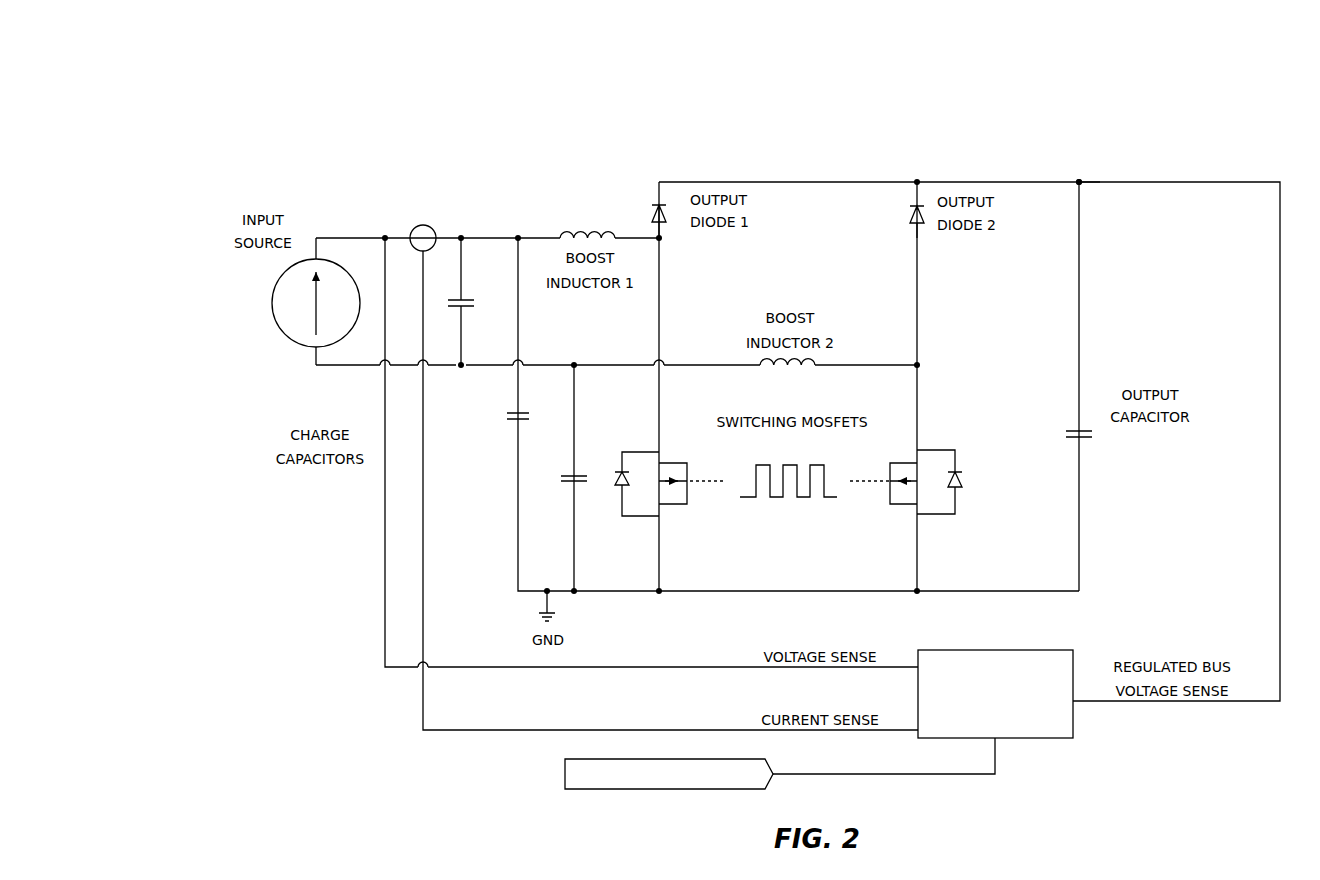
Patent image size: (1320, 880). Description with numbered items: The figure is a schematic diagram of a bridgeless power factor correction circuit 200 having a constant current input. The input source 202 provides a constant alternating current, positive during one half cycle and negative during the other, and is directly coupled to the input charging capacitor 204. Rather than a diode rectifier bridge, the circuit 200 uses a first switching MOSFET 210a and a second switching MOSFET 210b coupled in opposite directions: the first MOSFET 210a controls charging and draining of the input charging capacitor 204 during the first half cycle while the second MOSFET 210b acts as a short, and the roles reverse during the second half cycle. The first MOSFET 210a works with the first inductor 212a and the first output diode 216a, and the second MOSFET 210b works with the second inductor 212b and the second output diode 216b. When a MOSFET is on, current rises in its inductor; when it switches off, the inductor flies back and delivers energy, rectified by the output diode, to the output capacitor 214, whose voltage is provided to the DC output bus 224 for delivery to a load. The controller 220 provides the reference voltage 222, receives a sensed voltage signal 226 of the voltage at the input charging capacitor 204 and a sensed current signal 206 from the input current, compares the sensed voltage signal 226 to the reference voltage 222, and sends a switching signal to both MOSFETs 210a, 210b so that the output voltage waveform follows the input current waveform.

The bridgeless power factor correction circuit 200 is at (1108, 88).
The input source 202 is at (272, 302).
The input charging capacitor 204 is at (463, 307).
The sensed current signal 206 is at (424, 482).
The first switching MOSFET 210a is at (634, 517).
The second switching MOSFET 210b is at (937, 515).
The first inductor 212a is at (573, 232).
The second inductor 212b is at (758, 368).
The output capacitor 214 is at (1084, 438).
The first output diode 216a is at (664, 222).
The second output diode 216b is at (920, 225).
The controller 220 is at (1035, 742).
The reference voltage 222 is at (563, 773).
The DC output bus 224 is at (1080, 180).
The sensed voltage signal 226 is at (385, 565).